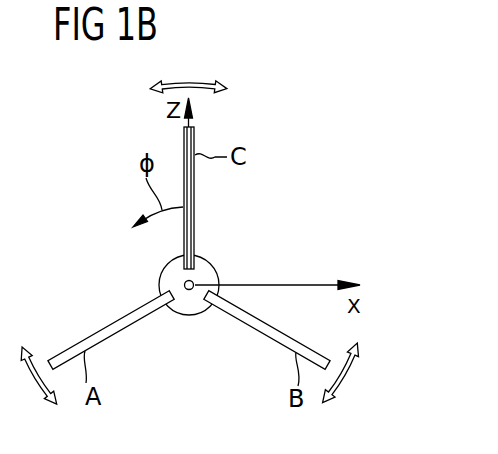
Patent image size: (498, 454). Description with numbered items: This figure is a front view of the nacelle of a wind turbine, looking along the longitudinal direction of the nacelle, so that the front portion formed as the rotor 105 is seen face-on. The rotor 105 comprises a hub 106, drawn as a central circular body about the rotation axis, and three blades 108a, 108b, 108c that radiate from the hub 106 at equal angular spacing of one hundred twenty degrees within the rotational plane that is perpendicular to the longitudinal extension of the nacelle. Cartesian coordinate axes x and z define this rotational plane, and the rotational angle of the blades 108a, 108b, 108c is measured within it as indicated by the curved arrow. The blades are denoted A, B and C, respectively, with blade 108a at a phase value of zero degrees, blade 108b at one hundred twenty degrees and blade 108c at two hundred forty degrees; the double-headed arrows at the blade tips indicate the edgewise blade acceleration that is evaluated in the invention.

The rotor 105 is at (188, 315).
The hub 106 is at (185, 283).
The blade 108a is at (91, 338).
The blade 108b is at (246, 323).
The blade 108c is at (195, 228).